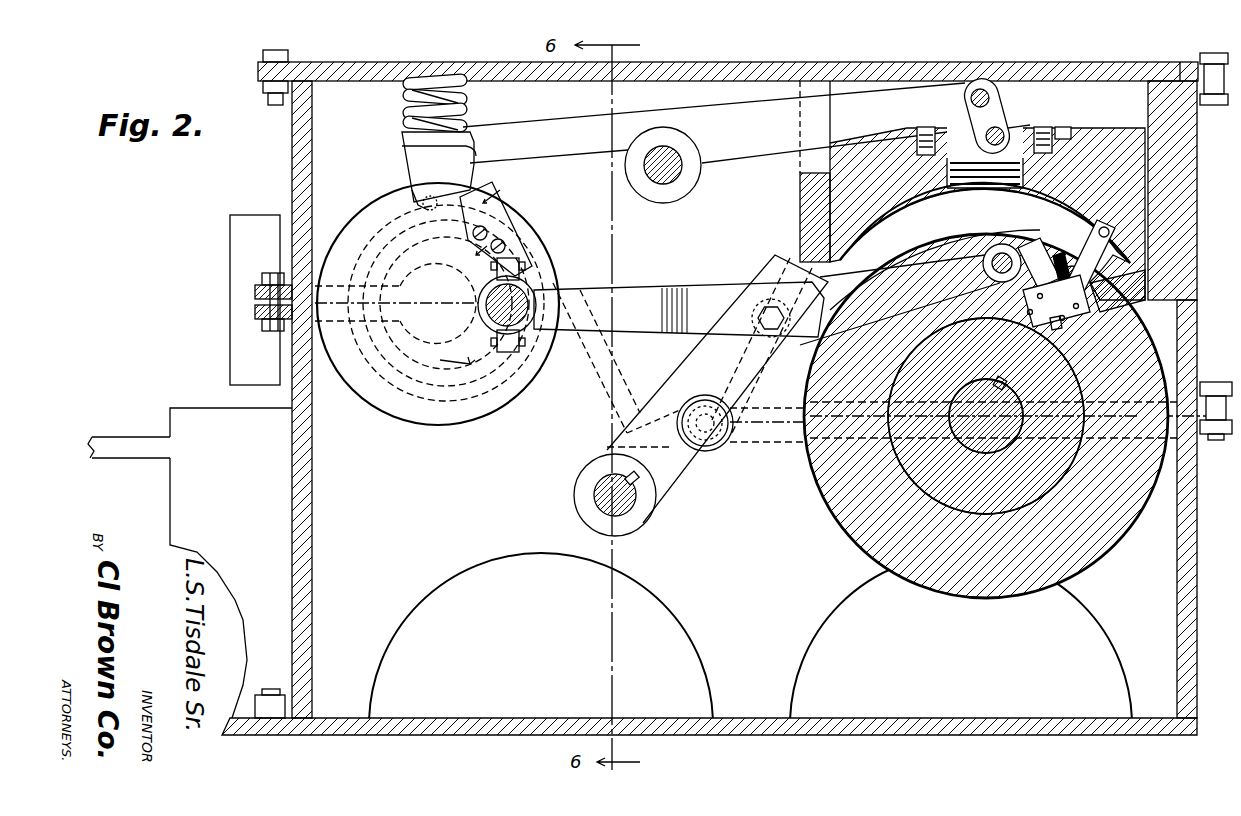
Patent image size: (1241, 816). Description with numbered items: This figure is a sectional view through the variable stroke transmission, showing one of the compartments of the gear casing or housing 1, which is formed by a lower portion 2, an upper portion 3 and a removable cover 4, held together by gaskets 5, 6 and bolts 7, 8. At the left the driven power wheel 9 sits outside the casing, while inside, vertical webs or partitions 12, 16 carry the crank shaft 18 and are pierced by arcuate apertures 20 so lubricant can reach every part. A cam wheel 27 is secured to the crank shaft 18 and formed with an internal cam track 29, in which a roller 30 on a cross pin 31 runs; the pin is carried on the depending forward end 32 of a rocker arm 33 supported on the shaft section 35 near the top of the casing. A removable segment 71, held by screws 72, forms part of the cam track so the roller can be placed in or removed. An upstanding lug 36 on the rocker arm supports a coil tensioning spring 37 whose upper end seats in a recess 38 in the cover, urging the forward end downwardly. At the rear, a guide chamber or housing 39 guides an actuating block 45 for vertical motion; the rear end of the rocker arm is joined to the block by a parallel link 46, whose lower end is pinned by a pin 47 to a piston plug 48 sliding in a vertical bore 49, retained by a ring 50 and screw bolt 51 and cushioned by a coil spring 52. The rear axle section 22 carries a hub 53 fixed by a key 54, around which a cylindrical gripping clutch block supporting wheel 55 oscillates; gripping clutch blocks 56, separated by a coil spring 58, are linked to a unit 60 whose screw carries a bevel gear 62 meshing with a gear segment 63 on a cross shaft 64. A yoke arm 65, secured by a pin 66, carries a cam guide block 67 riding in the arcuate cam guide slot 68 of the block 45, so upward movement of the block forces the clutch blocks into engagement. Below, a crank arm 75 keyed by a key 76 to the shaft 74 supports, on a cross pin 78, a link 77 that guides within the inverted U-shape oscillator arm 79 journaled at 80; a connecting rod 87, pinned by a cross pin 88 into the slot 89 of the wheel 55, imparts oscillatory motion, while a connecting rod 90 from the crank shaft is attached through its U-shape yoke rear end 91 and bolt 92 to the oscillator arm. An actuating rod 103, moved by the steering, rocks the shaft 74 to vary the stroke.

The gear casing or housing 1 is at (1204, 180).
The lower portion 2 is at (1190, 525).
The upper portion 3 is at (1180, 268).
The removable cover 4 is at (1040, 64).
The gasket 5 is at (1212, 382).
The gasket 6 is at (1182, 68).
The bolt 7 is at (1212, 436).
The bolt 8 is at (1212, 58).
The driven power wheel 9 is at (230, 258).
The web or partition 12 is at (670, 470).
The web or partition 16 is at (490, 200).
The crank shaft 18 is at (540, 290).
The arcuate aperture 20 is at (795, 666).
The rear axle section 22 is at (990, 442).
The cam wheel 27 is at (394, 410).
The internal cam track 29 is at (488, 400).
The roller 30 is at (437, 202).
The cross pin 31 is at (420, 208).
The depending forward end 32 is at (404, 160).
The rocker arm 33 is at (628, 160).
The shaft section 35 is at (680, 178).
The upstanding lug 36 is at (468, 121).
The coil tensioning spring 37 is at (405, 104).
The seat or recess 38 is at (472, 80).
The guide chamber or housing 39 is at (1108, 76).
The actuating block 45 is at (1105, 147).
The parallel link 46 is at (990, 102).
The pin 47 is at (1003, 132).
The piston plug 48 is at (1025, 128).
The vertical bore 49 is at (952, 150).
The ring 50 is at (1046, 128).
The screw bolt 51 is at (928, 128).
The coil spring 52 is at (1000, 190).
The hub 53 is at (1010, 495).
The key 54 is at (1000, 381).
The gripping clutch block supporting wheel 55 is at (830, 500).
The gripping clutch block 56 is at (1068, 320).
The coil spring 58 is at (1056, 301).
The unit 60 is at (1028, 262).
The bevel gear 62 is at (1117, 286).
The gear segment 63 is at (1058, 258).
The cross shaft 64 is at (1077, 267).
The yoke arm 65 is at (1089, 258).
The pin / stub shaft 66 is at (1124, 262).
The cam guide block 67 is at (1098, 230).
The arcuate cam guide slot 68 is at (1013, 200).
The removable segment 71 is at (506, 246).
The screw 72 is at (488, 232).
The shaft 74 is at (594, 497).
The crank arm 75 is at (698, 472).
The key 76 is at (638, 478).
The link 77 is at (708, 366).
The cross pin 78 is at (690, 410).
The oscillator arm 79 is at (780, 258).
The journal 80 is at (730, 440).
The connecting rod 87 is at (900, 300).
The cross pin 88 is at (982, 266).
The slot 89 is at (906, 262).
The connecting rod 90 is at (640, 302).
The U-shape yoke rear end 91 is at (720, 305).
The bolt 92 is at (780, 316).
The actuating rod 103 is at (128, 444).